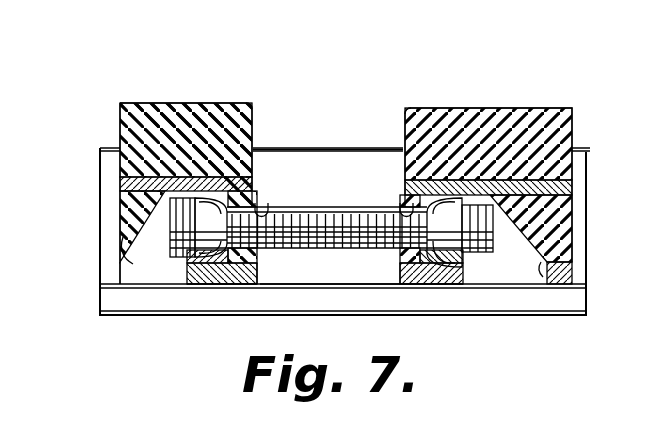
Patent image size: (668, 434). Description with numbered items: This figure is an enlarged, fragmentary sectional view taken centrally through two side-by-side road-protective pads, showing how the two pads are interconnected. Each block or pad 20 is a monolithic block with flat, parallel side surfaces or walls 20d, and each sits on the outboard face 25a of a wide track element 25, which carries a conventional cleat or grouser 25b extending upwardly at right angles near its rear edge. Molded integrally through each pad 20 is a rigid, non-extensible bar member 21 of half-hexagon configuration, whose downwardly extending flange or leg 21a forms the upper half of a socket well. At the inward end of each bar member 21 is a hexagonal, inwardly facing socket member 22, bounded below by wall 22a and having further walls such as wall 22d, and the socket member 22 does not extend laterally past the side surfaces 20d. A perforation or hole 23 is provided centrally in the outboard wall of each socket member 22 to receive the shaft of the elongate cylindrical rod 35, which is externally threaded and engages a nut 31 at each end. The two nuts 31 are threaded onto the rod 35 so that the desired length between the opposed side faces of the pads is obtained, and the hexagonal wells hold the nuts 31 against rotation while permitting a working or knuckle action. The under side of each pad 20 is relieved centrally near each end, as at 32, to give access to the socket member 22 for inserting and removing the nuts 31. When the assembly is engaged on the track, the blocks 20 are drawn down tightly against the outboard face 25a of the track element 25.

The block or pad 20 is at (137, 103).
The side surfaces or walls of pad 20d is at (254, 116).
The cleat or grouser 25b is at (300, 128).
The bar member 21 is at (118, 180).
The nut 31 is at (253, 177).
The perforation or hole 23 is at (268, 207).
The elongate cylindrical rod 35 is at (350, 212).
The downwardly extending flange or leg of bar member 21a is at (152, 220).
The relief in under side of pad 32 is at (118, 262).
The wall of socket member 22d is at (257, 263).
The socket member 22 is at (187, 273).
The lower wall of socket member 22a is at (212, 286).
The outboard face of track element 25a is at (374, 285).
The track element 25 is at (505, 304).